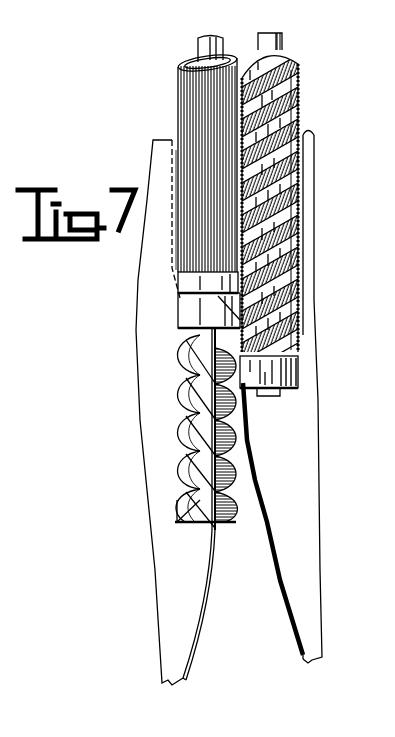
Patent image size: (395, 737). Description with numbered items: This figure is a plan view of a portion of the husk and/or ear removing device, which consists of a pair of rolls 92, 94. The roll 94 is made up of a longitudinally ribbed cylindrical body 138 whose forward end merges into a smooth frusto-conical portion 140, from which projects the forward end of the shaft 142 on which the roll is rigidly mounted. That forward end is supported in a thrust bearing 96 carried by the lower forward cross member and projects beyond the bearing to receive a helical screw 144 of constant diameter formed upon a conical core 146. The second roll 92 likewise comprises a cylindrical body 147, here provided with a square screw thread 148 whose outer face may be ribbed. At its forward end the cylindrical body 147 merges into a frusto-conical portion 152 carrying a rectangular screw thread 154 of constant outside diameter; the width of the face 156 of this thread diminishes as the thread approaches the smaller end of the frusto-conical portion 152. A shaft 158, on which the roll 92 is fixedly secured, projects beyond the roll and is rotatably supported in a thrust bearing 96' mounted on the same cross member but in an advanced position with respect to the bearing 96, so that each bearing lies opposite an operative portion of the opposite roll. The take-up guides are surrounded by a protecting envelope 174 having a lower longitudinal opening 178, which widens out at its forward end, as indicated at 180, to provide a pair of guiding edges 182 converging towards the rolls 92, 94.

The roll 92 is at (300, 116).
The roll 94 is at (177, 117).
The thrust bearing 96 is at (169, 319).
The thrust bearing 96' is at (296, 376).
The longitudinally ribbed cylindrical body 138 is at (196, 98).
The smooth frusto-conical portion 140 is at (192, 284).
The shaft 142 is at (205, 50).
The helical screw 144 is at (175, 490).
The conical core 146 is at (197, 452).
The cylindrical body 147 is at (305, 202).
The square screw thread 148 is at (300, 162).
The frusto-conical portion 152 is at (298, 302).
The rectangular screw thread 154 is at (298, 314).
The face of the screw thread 156 is at (295, 332).
The shaft 158 is at (281, 46).
The protecting envelope 174 is at (148, 420).
The lower longitudinal opening 178 is at (216, 504).
The widened forward end of the lower longitudinal opening 180 is at (285, 582).
The guiding edges 182 is at (290, 628).